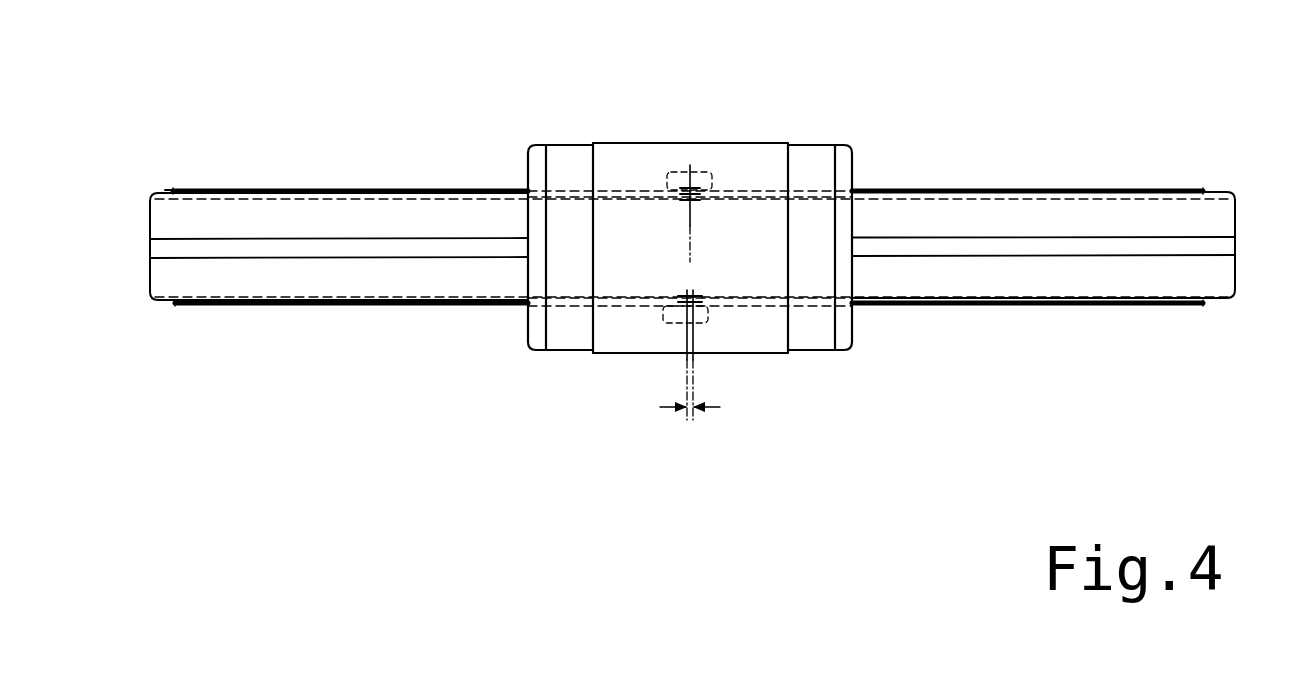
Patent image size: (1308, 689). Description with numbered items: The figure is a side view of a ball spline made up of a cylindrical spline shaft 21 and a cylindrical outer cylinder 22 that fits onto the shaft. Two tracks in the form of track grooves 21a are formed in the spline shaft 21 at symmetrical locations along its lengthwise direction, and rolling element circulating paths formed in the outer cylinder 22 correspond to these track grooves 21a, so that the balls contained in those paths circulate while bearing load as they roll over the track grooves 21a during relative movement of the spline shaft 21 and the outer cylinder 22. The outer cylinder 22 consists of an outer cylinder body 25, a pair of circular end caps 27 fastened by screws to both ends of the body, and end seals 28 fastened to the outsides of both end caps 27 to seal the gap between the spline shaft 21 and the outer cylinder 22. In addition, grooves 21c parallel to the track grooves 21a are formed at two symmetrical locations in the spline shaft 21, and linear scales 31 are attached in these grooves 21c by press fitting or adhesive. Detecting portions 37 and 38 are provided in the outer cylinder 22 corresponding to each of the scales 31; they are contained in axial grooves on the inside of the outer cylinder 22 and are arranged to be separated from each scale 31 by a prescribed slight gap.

The spline shaft 21 is at (1214, 184).
The track grooves 21a is at (975, 248).
The grooves 21c is at (165, 190).
The outer cylinder 22 is at (707, 184).
The outer cylinder body 25 is at (615, 148).
The end caps 27 is at (577, 153).
The end seals 28 is at (537, 153).
The linear scales 31 is at (370, 190).
The detecting portion 37 is at (701, 171).
The detecting portion 38 is at (672, 322).